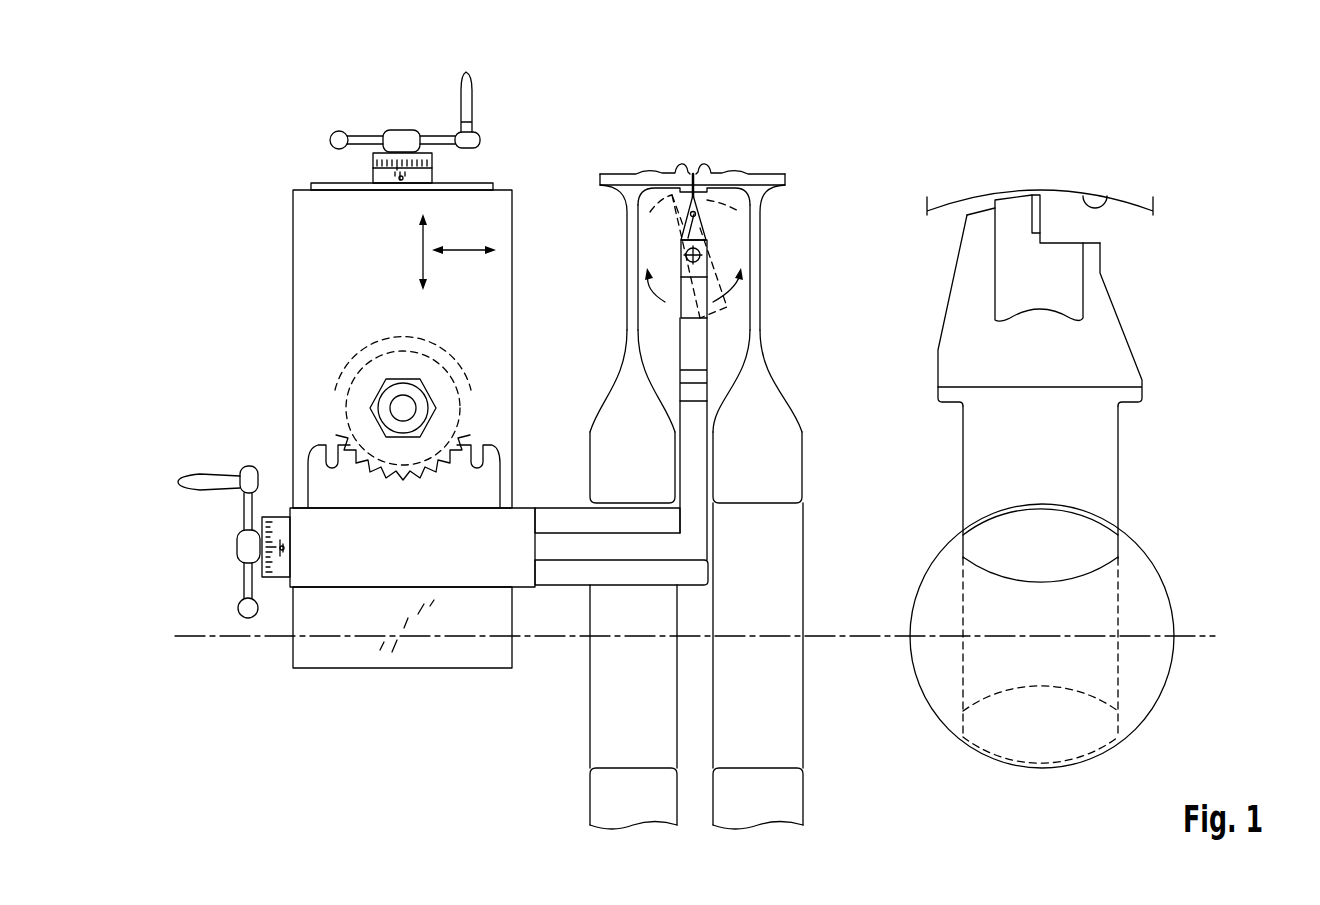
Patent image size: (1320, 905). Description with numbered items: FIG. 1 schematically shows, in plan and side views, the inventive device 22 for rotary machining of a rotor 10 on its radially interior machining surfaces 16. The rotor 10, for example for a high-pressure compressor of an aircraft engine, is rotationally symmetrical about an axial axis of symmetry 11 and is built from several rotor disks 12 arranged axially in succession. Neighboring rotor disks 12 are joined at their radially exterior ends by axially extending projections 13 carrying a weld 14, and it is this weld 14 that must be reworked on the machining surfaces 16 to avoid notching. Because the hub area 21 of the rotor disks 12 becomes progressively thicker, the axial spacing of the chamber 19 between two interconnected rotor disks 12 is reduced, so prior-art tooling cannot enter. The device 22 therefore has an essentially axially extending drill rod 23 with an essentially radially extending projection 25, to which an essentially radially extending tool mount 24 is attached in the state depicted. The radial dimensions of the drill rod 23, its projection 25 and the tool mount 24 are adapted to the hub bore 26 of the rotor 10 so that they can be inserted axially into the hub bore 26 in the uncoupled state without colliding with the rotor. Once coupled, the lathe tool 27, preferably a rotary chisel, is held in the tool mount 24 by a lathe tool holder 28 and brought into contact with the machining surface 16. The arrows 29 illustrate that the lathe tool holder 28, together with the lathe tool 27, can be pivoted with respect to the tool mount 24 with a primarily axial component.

The rotor 10 is at (622, 170).
The axial axis of symmetry 11 is at (546, 643).
The rotor disks 12 is at (632, 268).
The projections 13 is at (672, 176).
The weld 14 is at (693, 176).
The radially interior machining surfaces 16 is at (1110, 208).
The chamber 19 is at (727, 333).
The hub area 21 is at (620, 418).
The device for rotary machining 22 is at (288, 600).
The drill rod 23 is at (598, 548).
The tool mount 24 is at (698, 365).
The projection 25 is at (698, 504).
The hub bore 26 is at (775, 711).
The lathe tool 27 is at (725, 190).
The lathe tool holder 28 is at (685, 288).
The pivoting direction 29 is at (660, 298).